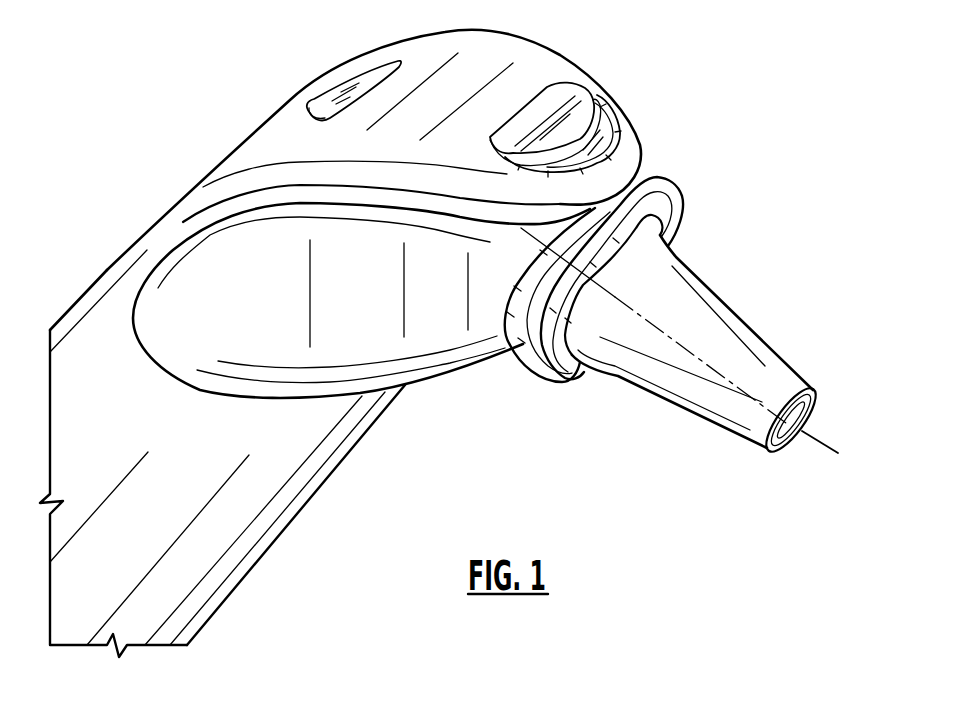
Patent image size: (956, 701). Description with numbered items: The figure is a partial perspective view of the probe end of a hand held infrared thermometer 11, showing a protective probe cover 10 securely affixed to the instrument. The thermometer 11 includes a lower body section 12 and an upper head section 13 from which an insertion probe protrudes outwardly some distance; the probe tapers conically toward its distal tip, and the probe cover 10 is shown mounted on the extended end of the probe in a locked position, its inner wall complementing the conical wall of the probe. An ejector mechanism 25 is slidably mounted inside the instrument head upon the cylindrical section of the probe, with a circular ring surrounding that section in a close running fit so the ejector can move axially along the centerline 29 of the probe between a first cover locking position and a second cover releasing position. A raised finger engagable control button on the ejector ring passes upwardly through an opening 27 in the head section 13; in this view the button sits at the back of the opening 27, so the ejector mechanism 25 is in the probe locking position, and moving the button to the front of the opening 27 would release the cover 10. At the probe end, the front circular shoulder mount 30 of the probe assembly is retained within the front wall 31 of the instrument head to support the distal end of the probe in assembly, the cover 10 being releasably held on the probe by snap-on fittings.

The protective probe cover 10 is at (747, 304).
The infrared thermometer 11 is at (662, 88).
The lower body section 12 is at (259, 558).
The upper head section 13 is at (578, 62).
The ejector mechanism 25 is at (560, 100).
The opening 27 is at (603, 127).
The centerline 29 is at (815, 428).
The front circular shoulder mount 30 is at (520, 320).
The front wall 31 is at (483, 268).